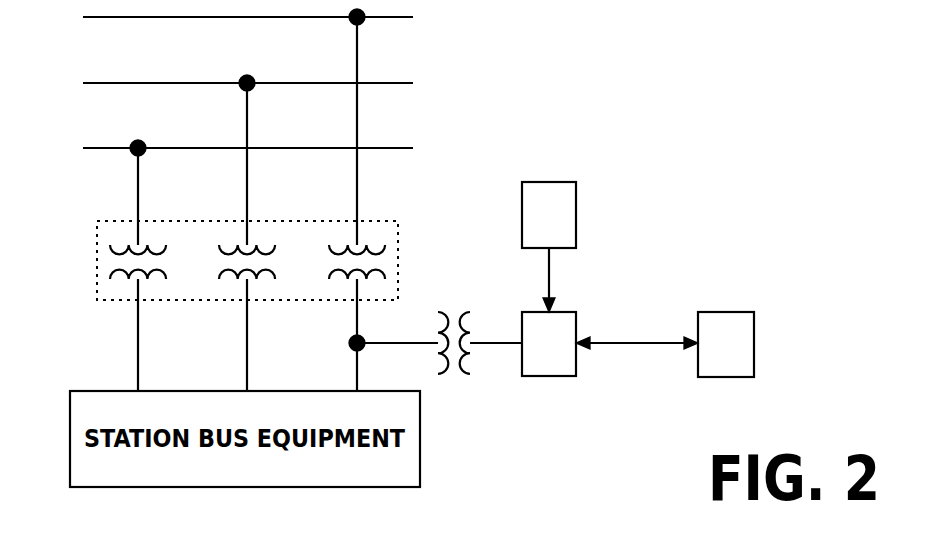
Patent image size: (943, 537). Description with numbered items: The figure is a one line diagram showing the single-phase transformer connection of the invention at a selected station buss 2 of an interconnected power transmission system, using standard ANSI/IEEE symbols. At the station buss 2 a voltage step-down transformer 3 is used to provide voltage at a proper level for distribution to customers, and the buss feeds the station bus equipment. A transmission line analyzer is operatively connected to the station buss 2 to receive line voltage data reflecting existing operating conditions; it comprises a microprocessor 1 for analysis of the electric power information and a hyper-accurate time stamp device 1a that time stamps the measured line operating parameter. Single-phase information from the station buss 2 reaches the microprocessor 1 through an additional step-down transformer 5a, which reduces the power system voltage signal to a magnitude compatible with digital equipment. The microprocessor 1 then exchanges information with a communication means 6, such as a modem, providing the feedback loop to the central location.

The station buss 2 is at (438, 17).
The voltage step-down transformer 3 is at (84, 258).
The additional step-down transformer 5a is at (453, 390).
The hyper-accurate time stamp device 1a is at (549, 247).
The microprocessor 1 is at (549, 344).
The communication means 6 is at (726, 344).